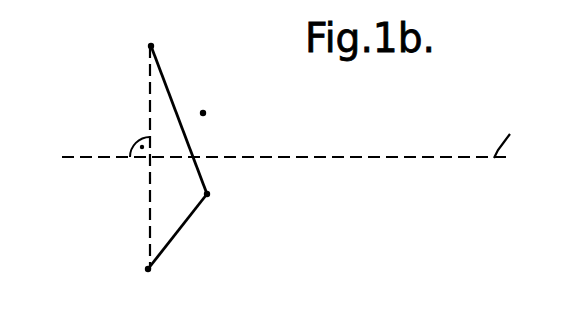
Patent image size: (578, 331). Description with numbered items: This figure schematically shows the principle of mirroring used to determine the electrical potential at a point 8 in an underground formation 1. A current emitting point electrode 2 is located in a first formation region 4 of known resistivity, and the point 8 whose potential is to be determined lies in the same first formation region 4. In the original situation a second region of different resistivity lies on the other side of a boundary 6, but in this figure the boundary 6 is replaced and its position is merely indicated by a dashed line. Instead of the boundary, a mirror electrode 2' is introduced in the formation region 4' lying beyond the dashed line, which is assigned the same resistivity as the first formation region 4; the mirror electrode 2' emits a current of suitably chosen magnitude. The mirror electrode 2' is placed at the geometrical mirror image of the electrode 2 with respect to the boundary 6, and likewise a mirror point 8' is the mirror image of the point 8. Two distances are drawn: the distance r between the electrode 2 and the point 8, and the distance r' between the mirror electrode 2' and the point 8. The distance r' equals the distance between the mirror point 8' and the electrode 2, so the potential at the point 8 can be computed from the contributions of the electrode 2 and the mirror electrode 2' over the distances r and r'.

The underground formation 1 is at (539, 168).
The current emitting point electrode 2 is at (168, 281).
The mirror electrode 2' is at (173, 36).
The first formation region 4 is at (457, 191).
The formation region 4' is at (460, 101).
The boundary 6 is at (509, 135).
The point 8 is at (230, 209).
The mirror point 8' is at (225, 100).
The distance between the electrode and point 8 r is at (183, 231).
The distance between the mirror electrode and point 8 r' is at (179, 120).